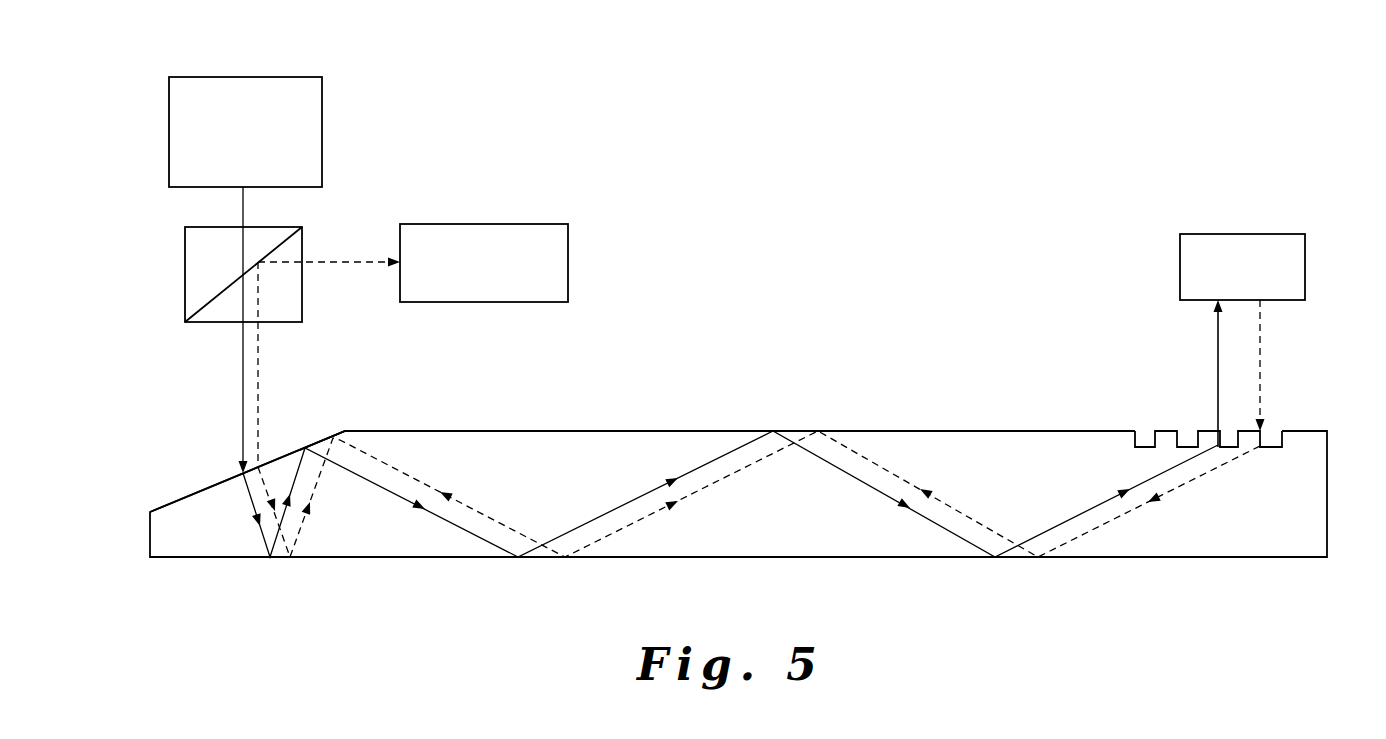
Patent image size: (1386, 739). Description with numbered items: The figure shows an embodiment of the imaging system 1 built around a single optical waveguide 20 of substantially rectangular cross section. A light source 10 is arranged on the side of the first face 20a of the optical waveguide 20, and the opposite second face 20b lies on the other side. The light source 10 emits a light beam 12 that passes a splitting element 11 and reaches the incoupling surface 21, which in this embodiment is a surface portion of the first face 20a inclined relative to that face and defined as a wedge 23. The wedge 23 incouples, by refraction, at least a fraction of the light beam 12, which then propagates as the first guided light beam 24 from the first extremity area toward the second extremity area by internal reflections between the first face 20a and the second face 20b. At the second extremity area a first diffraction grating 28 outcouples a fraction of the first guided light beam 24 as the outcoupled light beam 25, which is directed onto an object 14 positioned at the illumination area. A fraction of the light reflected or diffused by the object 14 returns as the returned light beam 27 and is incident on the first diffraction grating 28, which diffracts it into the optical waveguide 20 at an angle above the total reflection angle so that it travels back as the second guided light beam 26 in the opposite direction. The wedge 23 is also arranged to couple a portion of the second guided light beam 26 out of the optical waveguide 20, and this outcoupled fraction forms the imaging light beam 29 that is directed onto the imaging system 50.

The imaging system 1 is at (884, 358).
The light source 10 is at (293, 150).
The beam splitter 11 is at (302, 240).
The light beam 12 is at (242, 413).
The object 14 is at (1287, 265).
The optical waveguide 20 is at (968, 448).
The first face 20a is at (572, 431).
The second face 20b is at (833, 557).
The incoupling surface 21 is at (172, 467).
The wedge 23 is at (320, 442).
The first guided light beam 24 is at (613, 508).
The outcoupled light beam 25 is at (1216, 370).
The second guided light beam 26 is at (700, 488).
The returned light beam 27 is at (1262, 352).
The first diffraction grating 28 is at (1262, 430).
The imaging light beam 29 is at (258, 382).
The imaging system 50 is at (537, 270).